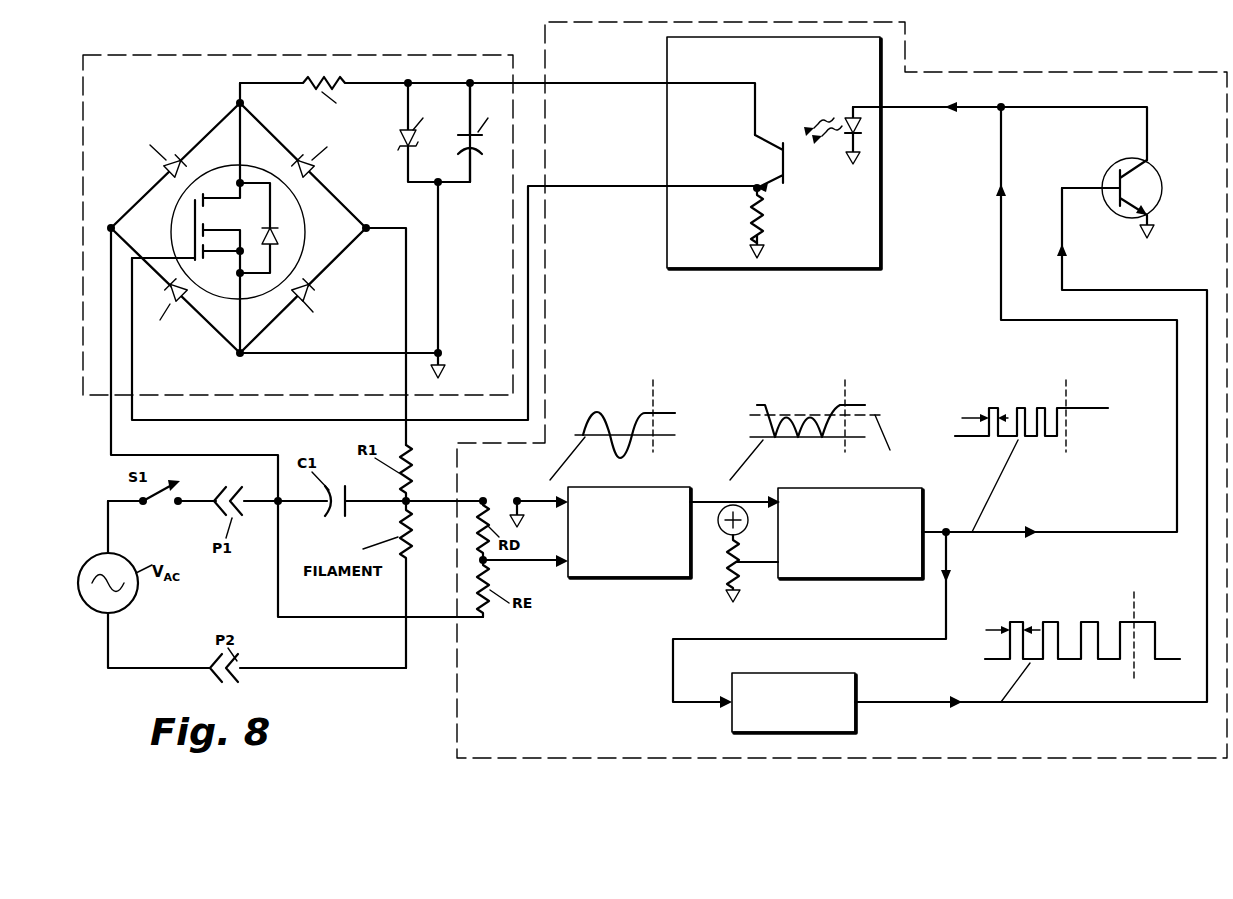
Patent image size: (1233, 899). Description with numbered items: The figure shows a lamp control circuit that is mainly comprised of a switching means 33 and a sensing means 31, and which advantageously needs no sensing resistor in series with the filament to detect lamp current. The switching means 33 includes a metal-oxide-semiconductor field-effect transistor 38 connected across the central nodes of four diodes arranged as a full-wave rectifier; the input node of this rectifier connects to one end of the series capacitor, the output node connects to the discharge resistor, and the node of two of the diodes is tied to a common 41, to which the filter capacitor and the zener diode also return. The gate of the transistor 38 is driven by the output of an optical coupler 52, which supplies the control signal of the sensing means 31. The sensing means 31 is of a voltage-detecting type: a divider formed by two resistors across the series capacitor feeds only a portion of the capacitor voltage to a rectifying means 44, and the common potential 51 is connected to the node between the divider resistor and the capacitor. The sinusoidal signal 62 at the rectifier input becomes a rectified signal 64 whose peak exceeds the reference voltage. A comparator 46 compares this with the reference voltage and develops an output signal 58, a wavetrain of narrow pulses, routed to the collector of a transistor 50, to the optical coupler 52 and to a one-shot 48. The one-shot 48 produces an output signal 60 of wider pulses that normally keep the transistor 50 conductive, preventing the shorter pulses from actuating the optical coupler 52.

The switching means 33 is at (326, 30).
The sensing means 31 is at (1020, 52).
The metal-oxide-semiconductor field-effect transistor 38 is at (305, 225).
The common 41 is at (446, 372).
The common potential 51 is at (511, 511).
The optical coupler 52 is at (882, 213).
The transistor 50 is at (1152, 162).
The rectifying means 44 is at (675, 487).
The comparator 46 is at (922, 494).
The one-shot 48 is at (857, 678).
The signal 62 is at (583, 415).
The signal 64 is at (758, 407).
The output signal 58 is at (986, 408).
The output signal 60 is at (1008, 622).